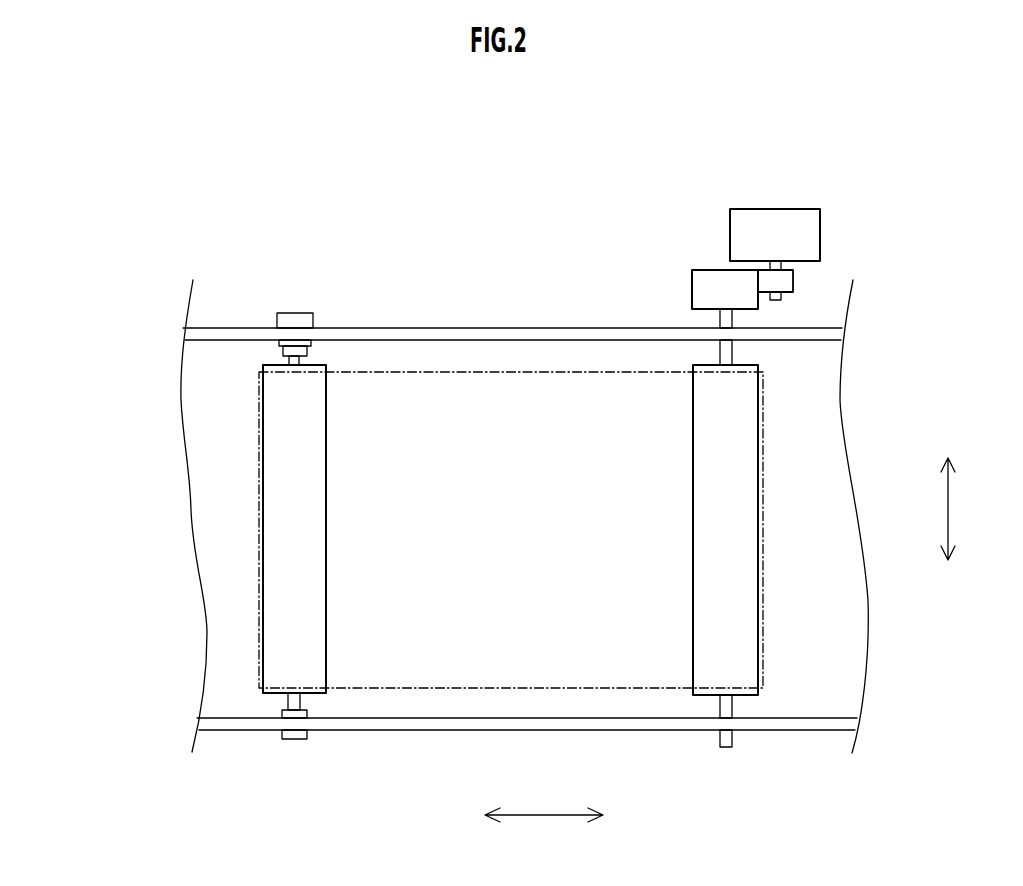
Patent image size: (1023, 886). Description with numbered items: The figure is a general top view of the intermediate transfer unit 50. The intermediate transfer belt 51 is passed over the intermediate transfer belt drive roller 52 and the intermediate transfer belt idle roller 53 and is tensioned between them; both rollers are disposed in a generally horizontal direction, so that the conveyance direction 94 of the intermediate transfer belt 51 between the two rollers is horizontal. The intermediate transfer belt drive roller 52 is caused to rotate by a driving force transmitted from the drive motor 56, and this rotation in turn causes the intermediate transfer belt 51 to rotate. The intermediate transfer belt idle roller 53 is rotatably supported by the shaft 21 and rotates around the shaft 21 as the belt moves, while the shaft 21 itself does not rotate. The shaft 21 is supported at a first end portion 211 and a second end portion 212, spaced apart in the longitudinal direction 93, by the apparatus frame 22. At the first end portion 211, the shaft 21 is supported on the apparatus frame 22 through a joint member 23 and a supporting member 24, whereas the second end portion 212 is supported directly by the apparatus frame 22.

The intermediate transfer unit 50 is at (220, 156).
The shaft 21 is at (288, 702).
The first end portion 211 is at (298, 361).
The second end portion 212 is at (300, 703).
The apparatus frame 22 is at (235, 727).
The joint member 23 is at (283, 352).
The supporting member 24 is at (296, 318).
The intermediate transfer belt 51 is at (512, 372).
The intermediate transfer belt drive roller 52 is at (700, 473).
The intermediate transfer belt idle roller 53 is at (320, 475).
The drive motor 56 is at (807, 208).
The longitudinal direction 93 is at (959, 509).
The conveyance direction 94 is at (544, 801).